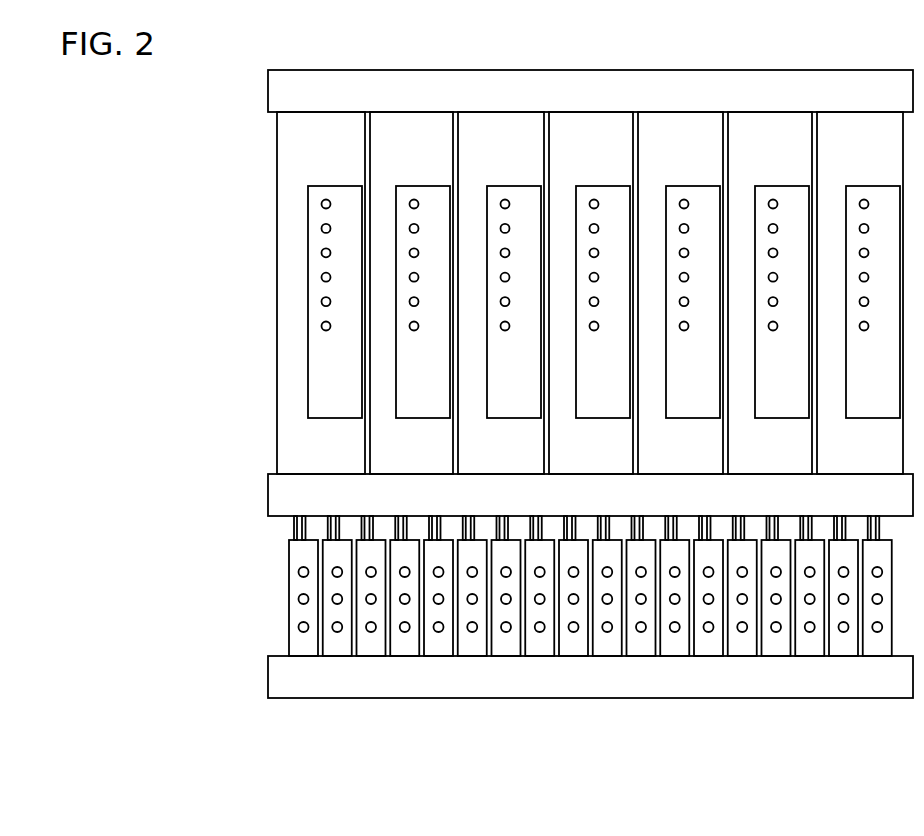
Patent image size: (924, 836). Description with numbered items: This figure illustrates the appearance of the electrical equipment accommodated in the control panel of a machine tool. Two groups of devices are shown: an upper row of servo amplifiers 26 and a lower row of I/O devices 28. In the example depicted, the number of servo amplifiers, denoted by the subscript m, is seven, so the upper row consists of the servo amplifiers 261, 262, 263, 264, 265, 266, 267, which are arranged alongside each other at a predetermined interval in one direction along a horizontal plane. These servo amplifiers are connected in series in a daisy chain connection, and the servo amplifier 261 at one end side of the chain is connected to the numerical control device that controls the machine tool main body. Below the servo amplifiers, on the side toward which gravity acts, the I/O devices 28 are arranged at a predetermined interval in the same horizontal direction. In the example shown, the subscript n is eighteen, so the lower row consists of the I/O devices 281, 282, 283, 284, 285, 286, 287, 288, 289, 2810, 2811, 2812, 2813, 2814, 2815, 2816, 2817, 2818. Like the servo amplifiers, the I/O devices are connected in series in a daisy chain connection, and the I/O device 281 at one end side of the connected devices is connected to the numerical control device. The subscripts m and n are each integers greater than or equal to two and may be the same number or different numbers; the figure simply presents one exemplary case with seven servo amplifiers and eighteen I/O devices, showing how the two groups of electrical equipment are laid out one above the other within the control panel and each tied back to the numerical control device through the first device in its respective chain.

The servo amplifiers 26 is at (262, 257).
The servo amplifier 261 is at (319, 128).
The servo amplifier 262 is at (410, 128).
The servo amplifier 263 is at (499, 128).
The servo amplifier 264 is at (584, 128).
The servo amplifier 265 is at (679, 128).
The servo amplifier 266 is at (768, 128).
The servo amplifier 267 is at (858, 128).
The I/O devices 28 is at (278, 600).
The I/O device 281 is at (304, 643).
The I/O device 282 is at (338, 643).
The I/O device 283 is at (372, 643).
The I/O device 284 is at (406, 643).
The I/O device 285 is at (440, 643).
The I/O device 286 is at (473, 643).
The I/O device 287 is at (507, 643).
The I/O device 288 is at (541, 643).
The I/O device 289 is at (574, 643).
The I/O device 2810 is at (608, 643).
The I/O device 2811 is at (642, 643).
The I/O device 2812 is at (676, 643).
The I/O device 2813 is at (710, 643).
The I/O device 2814 is at (743, 643).
The I/O device 2815 is at (777, 643).
The I/O device 2816 is at (811, 643).
The I/O device 2817 is at (844, 643).
The I/O device 2818 is at (878, 643).